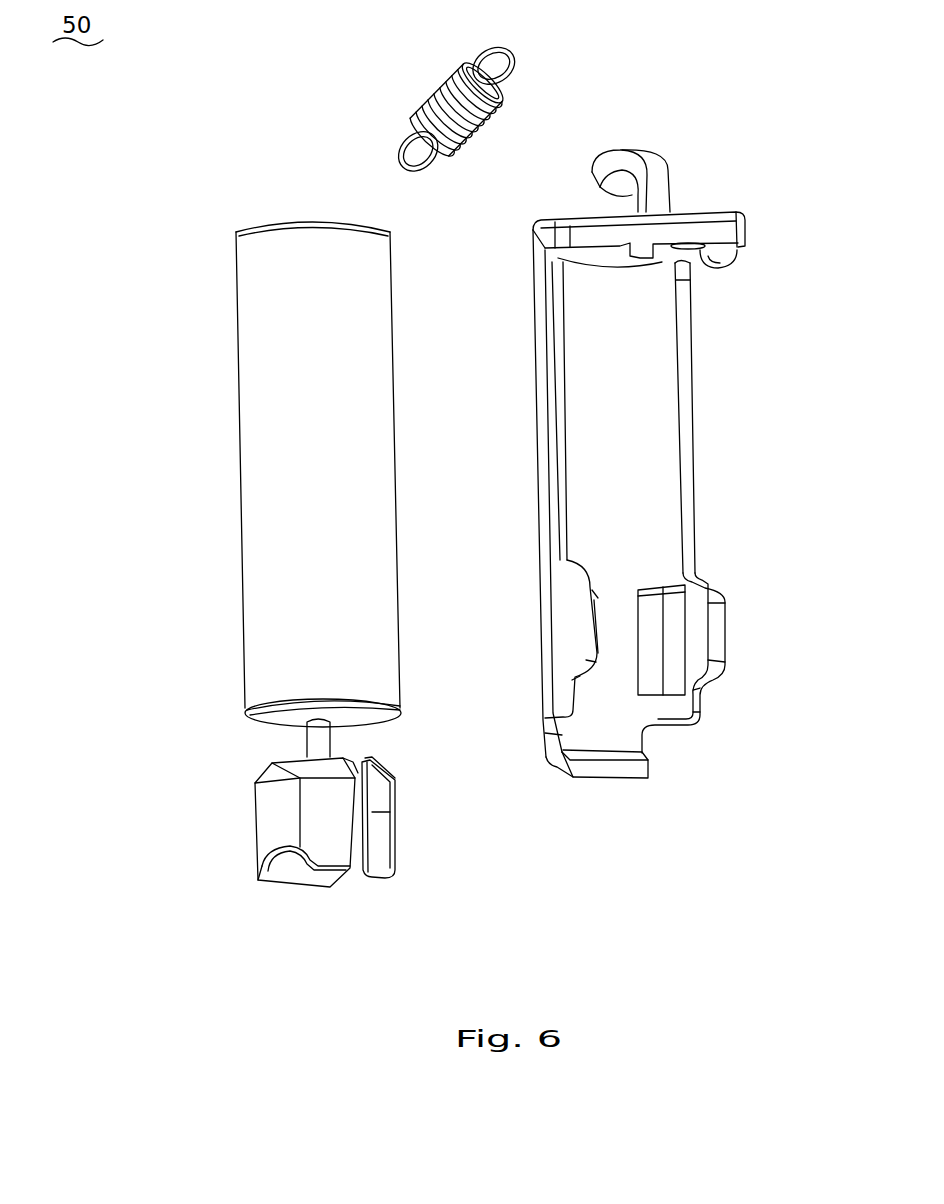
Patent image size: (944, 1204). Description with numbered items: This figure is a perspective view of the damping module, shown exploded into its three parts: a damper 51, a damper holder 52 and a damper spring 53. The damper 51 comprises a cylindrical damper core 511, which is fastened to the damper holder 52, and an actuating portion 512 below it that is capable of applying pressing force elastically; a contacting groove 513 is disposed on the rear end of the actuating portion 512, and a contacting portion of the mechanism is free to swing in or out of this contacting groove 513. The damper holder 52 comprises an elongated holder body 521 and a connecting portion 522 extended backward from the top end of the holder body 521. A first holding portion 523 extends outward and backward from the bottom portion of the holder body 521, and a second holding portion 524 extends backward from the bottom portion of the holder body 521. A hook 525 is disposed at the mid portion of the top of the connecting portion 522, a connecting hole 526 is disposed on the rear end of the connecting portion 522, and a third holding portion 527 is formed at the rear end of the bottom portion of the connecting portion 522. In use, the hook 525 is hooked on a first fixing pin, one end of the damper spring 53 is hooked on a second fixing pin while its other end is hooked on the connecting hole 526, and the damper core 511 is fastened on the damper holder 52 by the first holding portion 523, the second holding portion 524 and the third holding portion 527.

The damper 51 is at (224, 422).
The damper core 511 is at (272, 355).
The actuating portion 512 is at (287, 802).
The contacting groove 513 is at (380, 825).
The damper holder 52 is at (712, 392).
The holder body 521 is at (615, 447).
The connecting portion 522 is at (647, 227).
The first holding portion 523 is at (712, 630).
The second holding portion 524 is at (608, 770).
The hook 525 is at (630, 157).
The connecting hole 526 is at (705, 245).
The third holding portion 527 is at (727, 256).
The damper spring 53 is at (435, 104).